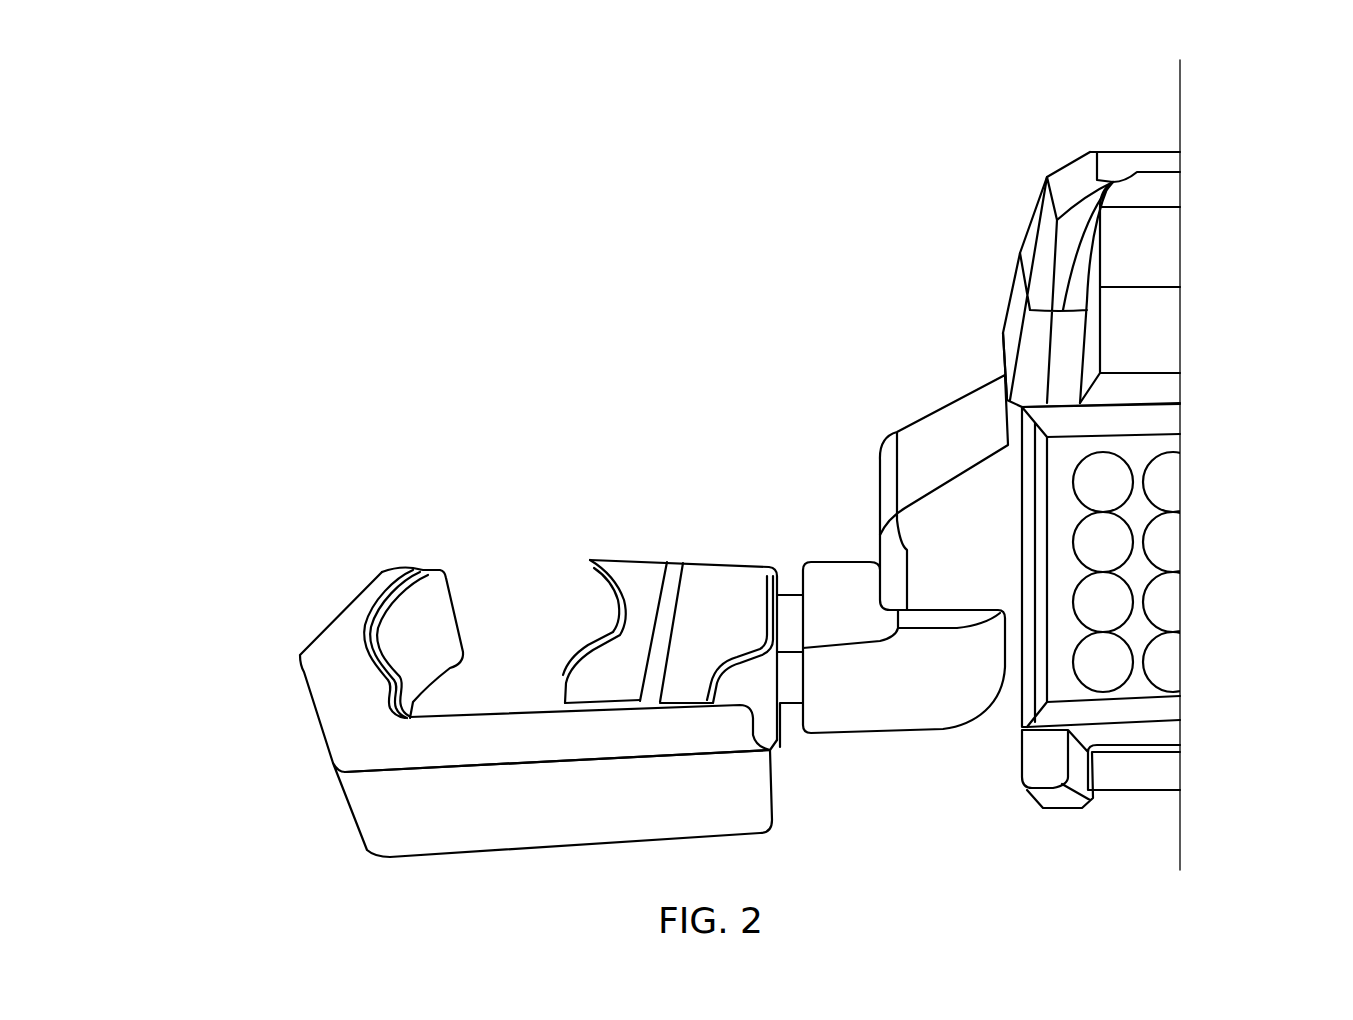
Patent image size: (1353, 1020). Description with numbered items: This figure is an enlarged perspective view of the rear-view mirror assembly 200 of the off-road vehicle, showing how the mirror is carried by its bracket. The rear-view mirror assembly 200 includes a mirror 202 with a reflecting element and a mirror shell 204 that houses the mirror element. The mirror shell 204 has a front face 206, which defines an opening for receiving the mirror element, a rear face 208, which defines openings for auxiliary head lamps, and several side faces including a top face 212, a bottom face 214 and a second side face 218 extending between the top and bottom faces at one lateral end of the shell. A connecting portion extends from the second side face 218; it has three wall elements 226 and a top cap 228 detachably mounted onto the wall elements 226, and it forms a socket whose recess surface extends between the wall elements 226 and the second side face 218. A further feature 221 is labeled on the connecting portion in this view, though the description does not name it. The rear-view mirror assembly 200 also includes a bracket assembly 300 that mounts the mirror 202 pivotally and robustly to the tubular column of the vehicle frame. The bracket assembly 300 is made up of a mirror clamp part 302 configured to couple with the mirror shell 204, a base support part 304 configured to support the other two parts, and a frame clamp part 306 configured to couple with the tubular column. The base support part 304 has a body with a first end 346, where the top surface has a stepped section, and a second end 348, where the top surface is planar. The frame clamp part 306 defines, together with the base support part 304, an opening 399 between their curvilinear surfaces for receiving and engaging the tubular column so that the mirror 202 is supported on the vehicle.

The rear-view mirror assembly 200 is at (1063, 153).
The mirror 202 is at (1165, 267).
The mirror shell 204 is at (1177, 167).
The front face 206 is at (1093, 585).
The rear face 208 is at (1035, 186).
The top face 212 is at (1148, 163).
The bottom face 214 is at (1133, 787).
The second side face 218 is at (1000, 338).
The latch block 221 is at (985, 583).
The wall elements 226 is at (877, 587).
The top cap 228 is at (950, 438).
The bracket assembly 300 is at (757, 463).
The mirror clamp part 302 is at (865, 483).
The base support part 304 is at (607, 540).
The frame clamp part 306 is at (305, 745).
The first end 346 is at (600, 612).
The second end 348 is at (740, 567).
The opening 399 is at (472, 598).